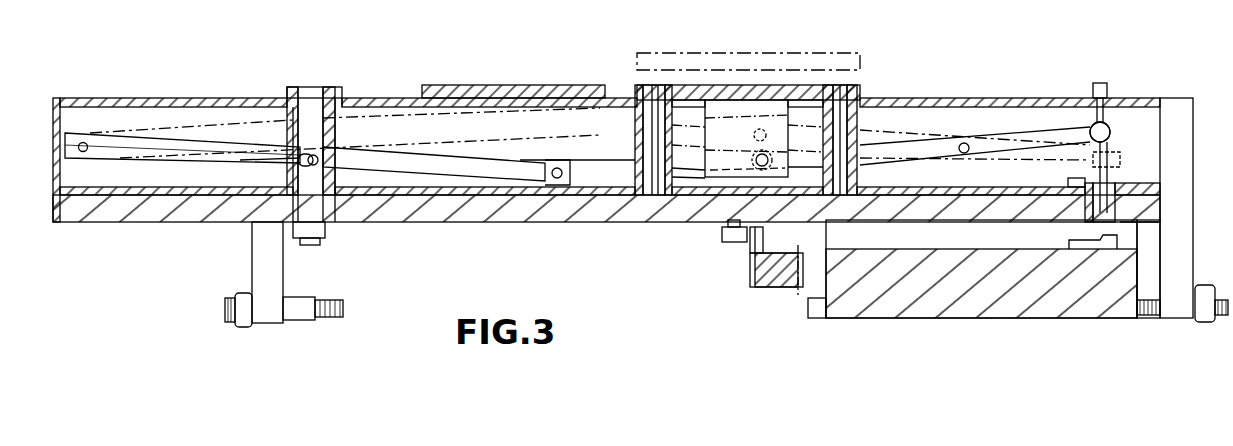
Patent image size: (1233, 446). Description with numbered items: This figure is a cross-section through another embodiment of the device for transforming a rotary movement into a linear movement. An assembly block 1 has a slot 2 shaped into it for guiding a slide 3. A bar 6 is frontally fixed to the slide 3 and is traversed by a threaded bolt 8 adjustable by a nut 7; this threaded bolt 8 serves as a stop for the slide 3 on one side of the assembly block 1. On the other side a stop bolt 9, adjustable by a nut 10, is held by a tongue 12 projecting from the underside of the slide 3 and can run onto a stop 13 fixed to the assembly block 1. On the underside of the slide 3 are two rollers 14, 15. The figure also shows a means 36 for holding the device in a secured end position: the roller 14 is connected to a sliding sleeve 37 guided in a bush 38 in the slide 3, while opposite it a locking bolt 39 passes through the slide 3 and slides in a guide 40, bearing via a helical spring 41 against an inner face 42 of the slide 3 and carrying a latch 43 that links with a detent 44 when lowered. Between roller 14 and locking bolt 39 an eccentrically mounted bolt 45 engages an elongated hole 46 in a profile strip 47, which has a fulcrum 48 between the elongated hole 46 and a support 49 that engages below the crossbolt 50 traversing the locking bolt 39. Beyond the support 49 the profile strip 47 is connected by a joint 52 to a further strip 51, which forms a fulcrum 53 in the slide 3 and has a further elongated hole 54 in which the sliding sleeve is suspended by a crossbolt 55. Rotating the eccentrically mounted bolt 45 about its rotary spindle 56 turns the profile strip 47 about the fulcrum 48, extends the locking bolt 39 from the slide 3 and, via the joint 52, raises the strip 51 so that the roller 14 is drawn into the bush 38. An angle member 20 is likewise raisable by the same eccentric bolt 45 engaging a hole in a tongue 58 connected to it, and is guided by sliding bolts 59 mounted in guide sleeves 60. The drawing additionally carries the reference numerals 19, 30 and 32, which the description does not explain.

The assembly block 1 is at (1115, 290).
The slot 2 is at (1010, 250).
The slide 3 is at (1022, 97).
The bar 6 is at (1195, 176).
The nut 7 is at (1205, 324).
The threaded bolt 8 is at (1150, 316).
The stop bolt 9 is at (224, 310).
The nut 10 is at (243, 327).
The tongue 12 is at (265, 312).
The stop 13 is at (815, 312).
The roller 14 is at (308, 246).
The roller 15 is at (732, 242).
The block 19 is at (440, 92).
The angle member 20 is at (800, 92).
The block 30 is at (776, 288).
The bracket 32 is at (755, 280).
The means for holding the device in a secured end position 36 is at (165, 122).
The sliding sleeve 37 is at (335, 215).
The bush 38 is at (290, 86).
The locking bolt 39 is at (1118, 160).
The guide 40 is at (1120, 200).
The helical spring 41 is at (1105, 124).
The inner face 42 is at (1064, 108).
The latch 43 is at (1125, 222).
The detent 44 is at (1085, 245).
The eccentrically mounted bolt 45 is at (716, 120).
The elongated hole 46 is at (766, 152).
The profile strip 47 is at (930, 148).
The fulcrum 48 is at (964, 155).
The support 49 is at (1110, 135).
The crossbolt 50 is at (1112, 128).
The strip 51 is at (175, 148).
The joint 52 is at (557, 180).
The fulcrum 53 is at (83, 142).
The elongated hole 54 is at (300, 162).
The crossbolt 55 is at (315, 155).
The rotary spindle 56 is at (758, 130).
The tongue 58 is at (700, 125).
The sliding bolts 59 is at (850, 96).
The guide sleeves 60 is at (640, 198).